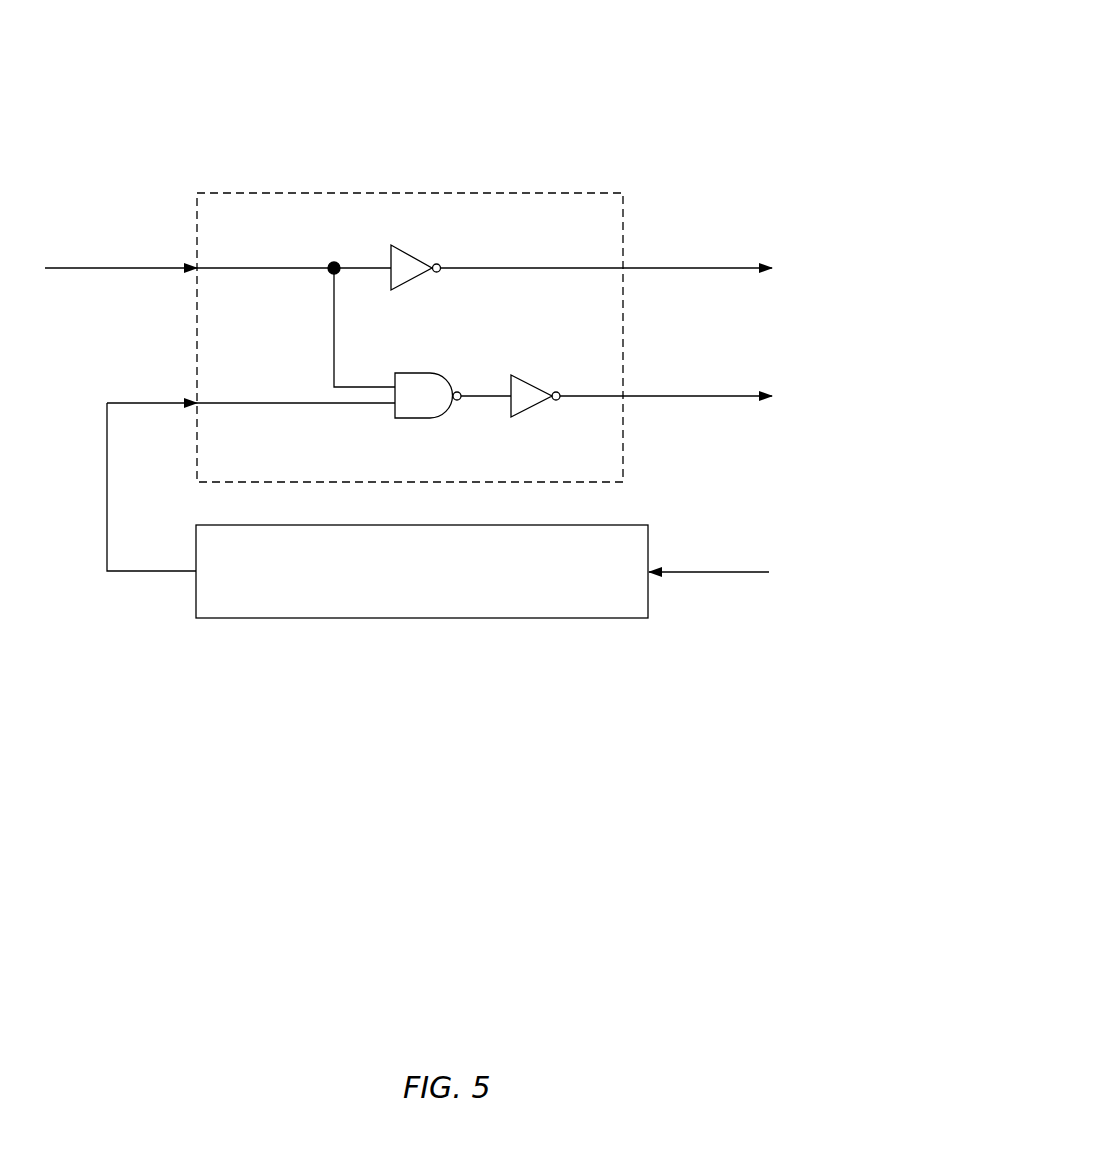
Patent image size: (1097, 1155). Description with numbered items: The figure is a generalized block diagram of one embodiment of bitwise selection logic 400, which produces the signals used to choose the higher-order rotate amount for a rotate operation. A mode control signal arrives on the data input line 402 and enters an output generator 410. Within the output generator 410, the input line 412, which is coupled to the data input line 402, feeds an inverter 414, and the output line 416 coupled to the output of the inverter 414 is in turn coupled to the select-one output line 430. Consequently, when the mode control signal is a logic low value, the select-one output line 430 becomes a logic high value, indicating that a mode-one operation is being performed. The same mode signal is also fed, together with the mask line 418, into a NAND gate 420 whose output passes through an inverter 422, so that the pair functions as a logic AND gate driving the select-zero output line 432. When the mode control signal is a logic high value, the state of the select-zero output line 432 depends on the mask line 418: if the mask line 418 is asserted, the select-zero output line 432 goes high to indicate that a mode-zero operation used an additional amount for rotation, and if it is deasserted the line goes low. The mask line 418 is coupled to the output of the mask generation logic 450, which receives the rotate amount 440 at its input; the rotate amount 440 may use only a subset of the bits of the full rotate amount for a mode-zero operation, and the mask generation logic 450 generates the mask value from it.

The bitwise selection logic 400 is at (612, 45).
The data input line 402 is at (93, 307).
The output generator 410 is at (410, 337).
The input line 412 is at (282, 307).
The inverter 414 is at (405, 287).
The output line 416 is at (516, 307).
The mask line 418 is at (270, 440).
The NAND gate 420 is at (418, 418).
The inverter 422 is at (525, 410).
The select 1 output line 430 is at (689, 305).
The select 0 output line 432 is at (689, 433).
The rotate amount 440 is at (725, 610).
The mask generation logic 450 is at (422, 571).